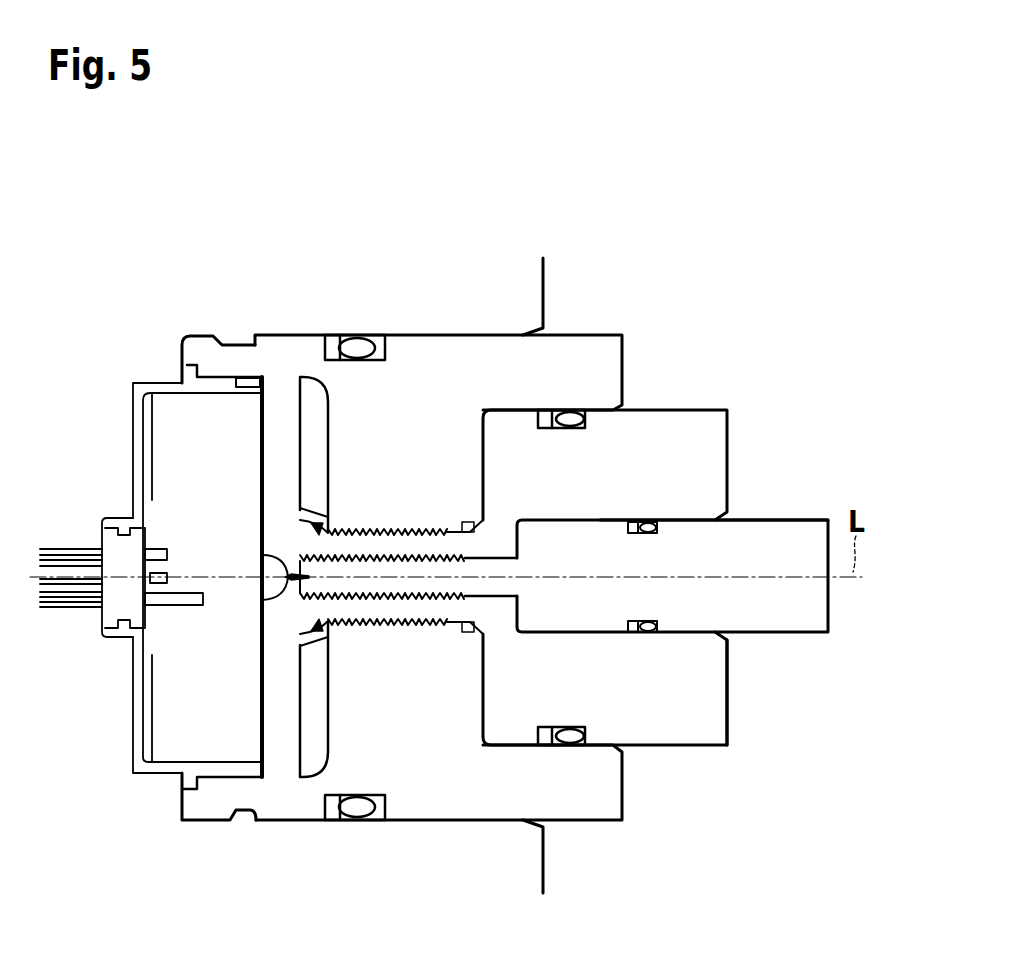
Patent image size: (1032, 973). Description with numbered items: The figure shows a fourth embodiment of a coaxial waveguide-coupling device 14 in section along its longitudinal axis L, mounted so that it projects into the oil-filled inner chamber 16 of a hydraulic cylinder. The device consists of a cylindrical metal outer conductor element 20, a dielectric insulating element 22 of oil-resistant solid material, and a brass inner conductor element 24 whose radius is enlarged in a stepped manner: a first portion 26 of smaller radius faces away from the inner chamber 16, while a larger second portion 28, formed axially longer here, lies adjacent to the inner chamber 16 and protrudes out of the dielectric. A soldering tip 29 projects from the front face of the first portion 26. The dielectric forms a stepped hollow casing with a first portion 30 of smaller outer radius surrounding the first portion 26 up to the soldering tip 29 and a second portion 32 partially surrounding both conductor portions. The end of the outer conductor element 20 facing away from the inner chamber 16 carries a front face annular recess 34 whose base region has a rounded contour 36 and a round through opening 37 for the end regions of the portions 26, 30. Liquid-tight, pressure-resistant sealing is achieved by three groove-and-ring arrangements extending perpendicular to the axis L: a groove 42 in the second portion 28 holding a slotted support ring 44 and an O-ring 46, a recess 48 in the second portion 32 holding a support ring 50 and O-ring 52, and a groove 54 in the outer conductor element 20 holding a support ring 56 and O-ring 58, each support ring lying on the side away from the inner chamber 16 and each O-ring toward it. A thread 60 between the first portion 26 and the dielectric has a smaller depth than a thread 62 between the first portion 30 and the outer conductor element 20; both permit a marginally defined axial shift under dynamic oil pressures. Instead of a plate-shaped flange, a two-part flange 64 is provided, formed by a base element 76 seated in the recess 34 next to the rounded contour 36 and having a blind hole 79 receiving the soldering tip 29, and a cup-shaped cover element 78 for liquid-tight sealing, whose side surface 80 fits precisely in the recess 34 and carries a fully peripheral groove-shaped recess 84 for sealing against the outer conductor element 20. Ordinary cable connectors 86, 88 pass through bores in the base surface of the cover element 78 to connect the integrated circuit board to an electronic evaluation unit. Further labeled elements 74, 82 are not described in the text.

The waveguide-coupling device 14 is at (752, 318).
The inner chamber 16 is at (826, 424).
The outer conductor element 20 is at (632, 818).
The dielectric insulating element 22 is at (740, 745).
The inner conductor element 24 is at (848, 617).
The first portion of the inner conductor element 26 is at (502, 590).
The second portion of the inner conductor element 28 is at (805, 522).
The soldering tip 29 is at (263, 597).
The first portion of the dielectric insulating element 30 is at (356, 603).
The second portion of the dielectric insulating element 32 is at (710, 684).
The annular recess 34 is at (217, 745).
The rounded contour 36 is at (303, 772).
The through opening 37 is at (338, 518).
The recess 42 is at (652, 620).
The support element 44 is at (633, 634).
The sealing element 46 is at (654, 634).
The recess 48 is at (560, 430).
The support element 50 is at (546, 410).
The sealing element 52 is at (564, 410).
The recess 54 is at (370, 360).
The support element 56 is at (333, 343).
The sealing element 58 is at (355, 342).
The thread 60 is at (414, 554).
The thread 62 is at (410, 627).
The flange 64 is at (128, 345).
The housing wall 74 is at (630, 290).
The base element 76 is at (278, 445).
The cover element 78 is at (110, 374).
The blind hole 79 is at (263, 557).
The side surface 80 is at (217, 377).
The latch hook 82 is at (183, 340).
The groove-shaped recess 84 is at (248, 380).
The electrical connector 86 is at (64, 530).
The electrical connector 88 is at (65, 622).